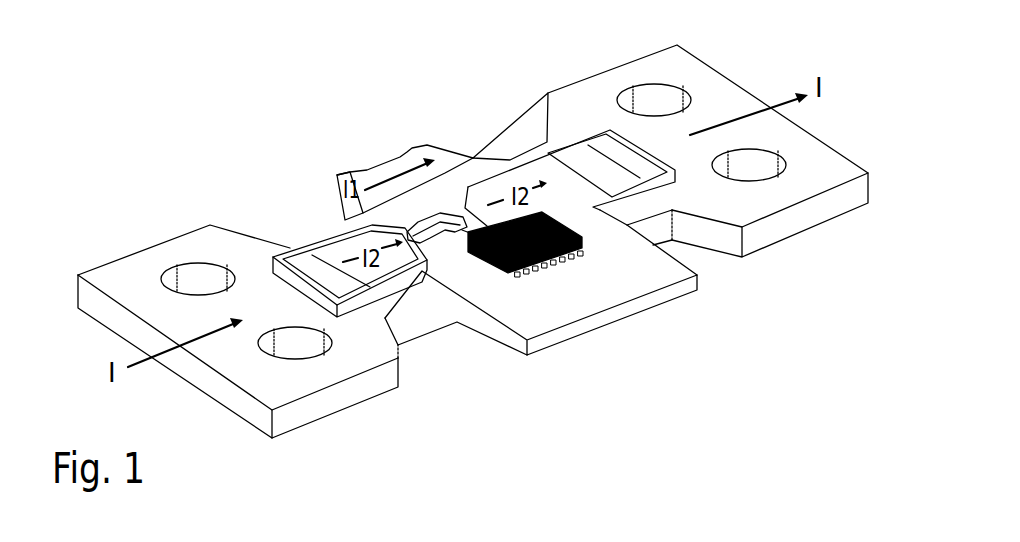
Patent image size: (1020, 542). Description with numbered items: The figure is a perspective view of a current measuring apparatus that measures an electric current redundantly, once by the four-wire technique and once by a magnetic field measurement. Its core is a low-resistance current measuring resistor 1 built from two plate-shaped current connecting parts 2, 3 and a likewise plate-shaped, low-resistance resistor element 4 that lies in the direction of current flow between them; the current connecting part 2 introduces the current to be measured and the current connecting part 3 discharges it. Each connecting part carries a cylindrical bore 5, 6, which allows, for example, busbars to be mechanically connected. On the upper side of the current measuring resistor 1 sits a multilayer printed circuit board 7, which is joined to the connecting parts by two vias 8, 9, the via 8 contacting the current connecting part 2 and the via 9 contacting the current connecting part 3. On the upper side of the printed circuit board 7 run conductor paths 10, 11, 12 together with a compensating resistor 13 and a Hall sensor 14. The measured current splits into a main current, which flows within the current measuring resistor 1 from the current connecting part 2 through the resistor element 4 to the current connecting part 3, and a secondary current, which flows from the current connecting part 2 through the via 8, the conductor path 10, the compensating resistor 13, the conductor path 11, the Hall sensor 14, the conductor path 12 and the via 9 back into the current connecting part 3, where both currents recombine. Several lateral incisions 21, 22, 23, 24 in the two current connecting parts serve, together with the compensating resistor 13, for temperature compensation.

The current measuring resistor 1 is at (466, 397).
The current connecting part 2 is at (125, 258).
The current connecting part 3 is at (670, 55).
The resistor element 4 is at (392, 168).
The cylindrical bore 5 is at (297, 347).
The cylindrical bore 6 is at (755, 165).
The printed circuit board 7 is at (648, 283).
The via 8 is at (308, 258).
The via 9 is at (612, 150).
The conductor path 10 is at (342, 248).
The conductor path 11 is at (460, 233).
The conductor path 12 is at (548, 165).
The compensating resistor 13 is at (440, 212).
The Hall sensor 14 is at (533, 282).
The incision 21 is at (270, 236).
The incision 22 is at (418, 350).
The incision 23 is at (510, 128).
The incision 24 is at (687, 253).